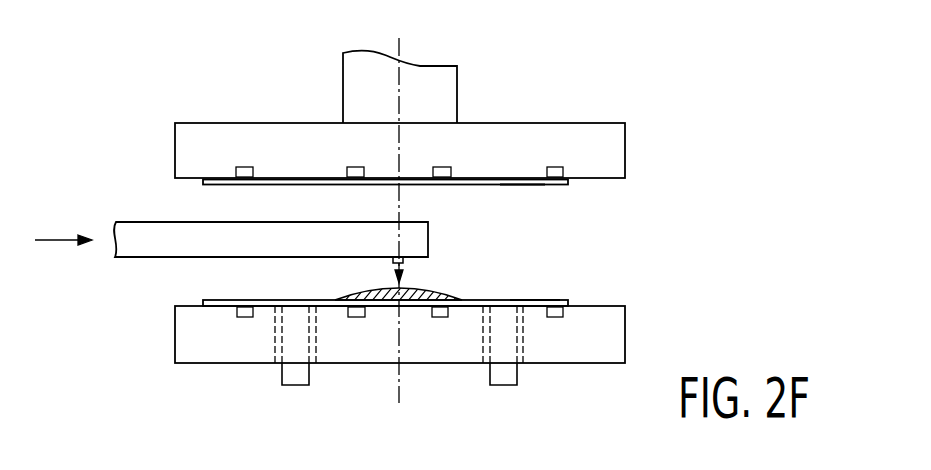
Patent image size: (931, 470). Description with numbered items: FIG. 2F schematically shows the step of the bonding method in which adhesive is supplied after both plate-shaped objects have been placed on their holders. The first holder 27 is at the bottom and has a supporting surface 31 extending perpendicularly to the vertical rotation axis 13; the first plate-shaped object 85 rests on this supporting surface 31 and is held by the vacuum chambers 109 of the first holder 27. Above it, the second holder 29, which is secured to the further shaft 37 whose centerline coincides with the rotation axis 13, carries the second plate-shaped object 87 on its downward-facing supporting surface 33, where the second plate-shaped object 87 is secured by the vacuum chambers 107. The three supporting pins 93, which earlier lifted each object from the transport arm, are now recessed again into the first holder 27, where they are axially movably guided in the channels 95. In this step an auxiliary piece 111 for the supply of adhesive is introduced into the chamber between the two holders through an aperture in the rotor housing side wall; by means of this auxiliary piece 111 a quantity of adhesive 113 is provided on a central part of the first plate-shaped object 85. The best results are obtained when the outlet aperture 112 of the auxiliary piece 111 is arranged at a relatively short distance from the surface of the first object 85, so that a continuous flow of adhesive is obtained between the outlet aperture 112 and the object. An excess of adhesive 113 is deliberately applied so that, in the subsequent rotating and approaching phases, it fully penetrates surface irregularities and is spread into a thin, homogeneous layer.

The rotation axis 13 is at (410, 63).
The further shaft 37 is at (348, 76).
The second holder 29 is at (607, 147).
The supporting surface of the second holder 33 is at (603, 181).
The second plate-shaped object 87 is at (521, 185).
The vacuum chambers 107 is at (347, 167).
The auxiliary piece 111 is at (137, 230).
The outlet aperture 112 is at (413, 258).
The adhesive 113 is at (427, 292).
The supporting surface of the first holder 31 is at (613, 306).
The first plate-shaped object 85 is at (532, 301).
The first holder 27 is at (608, 336).
The vacuum chambers of the first holder 109 is at (238, 298).
The channels 95 is at (273, 347).
The supporting pins 93 is at (293, 380).